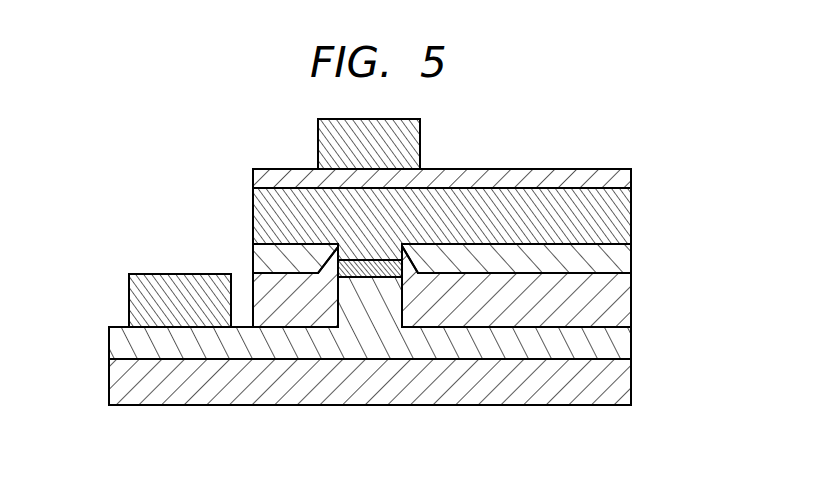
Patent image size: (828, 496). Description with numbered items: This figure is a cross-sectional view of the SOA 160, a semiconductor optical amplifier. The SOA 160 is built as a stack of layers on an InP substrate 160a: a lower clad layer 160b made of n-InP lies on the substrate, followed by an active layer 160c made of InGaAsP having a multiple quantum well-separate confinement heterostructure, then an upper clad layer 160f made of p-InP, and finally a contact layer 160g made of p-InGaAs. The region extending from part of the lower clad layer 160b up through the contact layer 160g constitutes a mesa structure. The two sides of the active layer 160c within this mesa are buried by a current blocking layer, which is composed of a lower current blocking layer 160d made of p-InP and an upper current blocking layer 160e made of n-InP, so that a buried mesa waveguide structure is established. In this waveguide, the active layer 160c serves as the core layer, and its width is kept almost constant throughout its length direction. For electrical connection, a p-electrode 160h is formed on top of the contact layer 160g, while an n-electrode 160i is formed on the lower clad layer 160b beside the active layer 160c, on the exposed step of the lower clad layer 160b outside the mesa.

The SOA 160 is at (97, 122).
The InP substrate 160a is at (631, 385).
The lower clad layer 160b is at (631, 341).
The active layer 160c is at (373, 278).
The lower current blocking layer 160d is at (631, 306).
The upper current blocking layer 160e is at (631, 254).
The upper clad layer 160f is at (631, 216).
The contact layer 160g is at (631, 179).
The p-electrode 160h is at (420, 127).
The n-electrode 160i is at (177, 283).